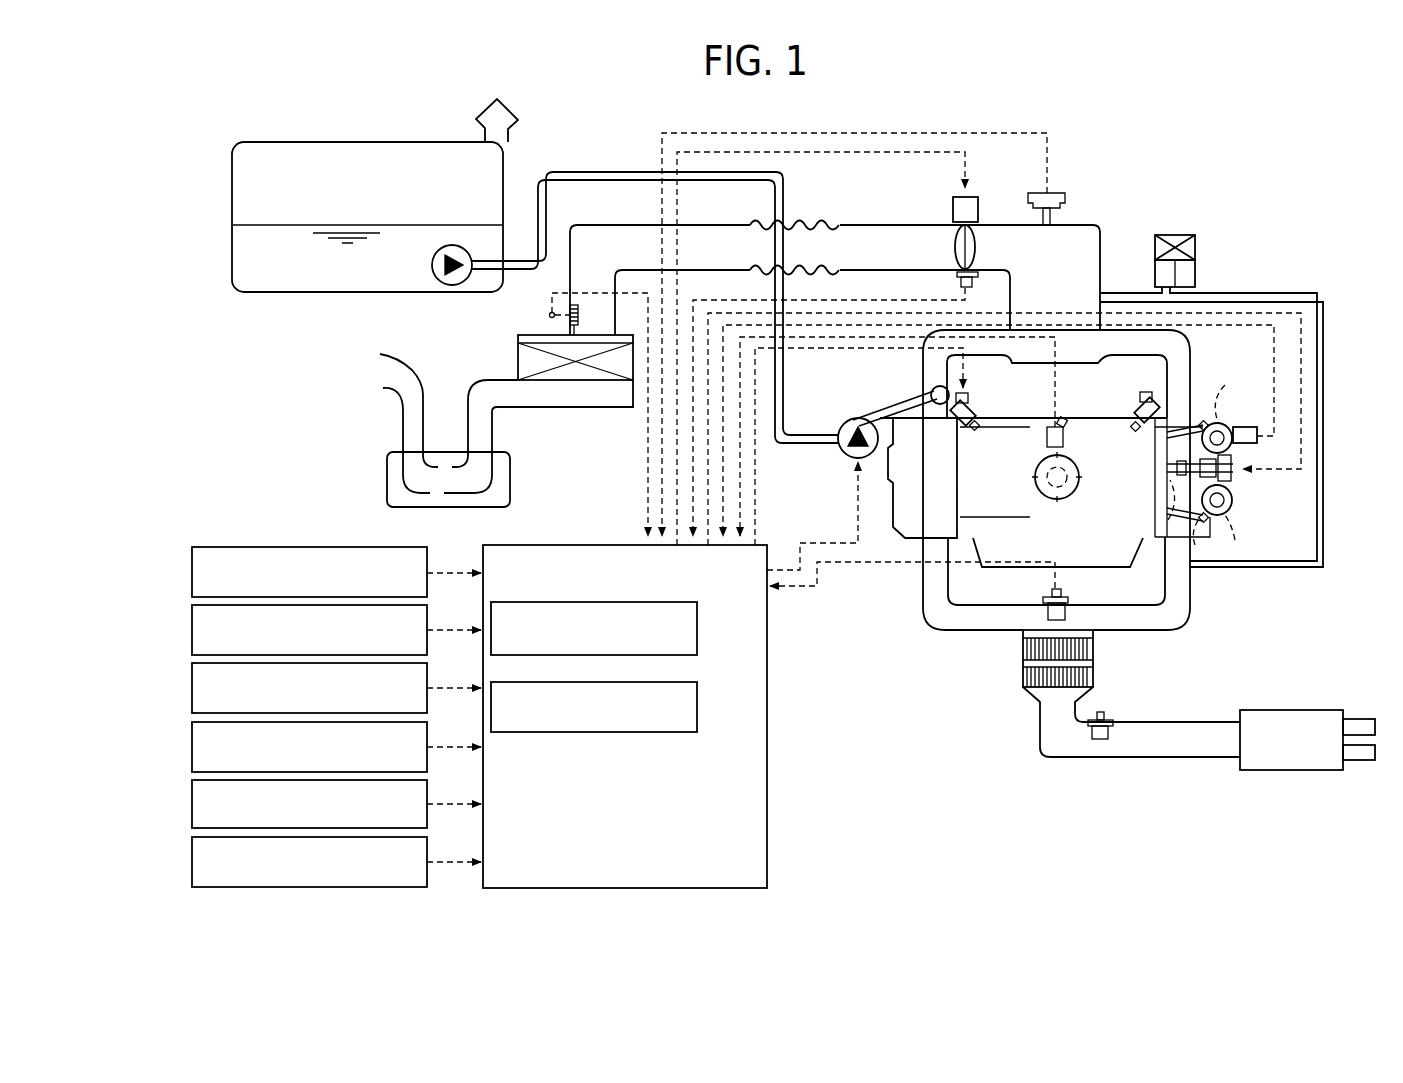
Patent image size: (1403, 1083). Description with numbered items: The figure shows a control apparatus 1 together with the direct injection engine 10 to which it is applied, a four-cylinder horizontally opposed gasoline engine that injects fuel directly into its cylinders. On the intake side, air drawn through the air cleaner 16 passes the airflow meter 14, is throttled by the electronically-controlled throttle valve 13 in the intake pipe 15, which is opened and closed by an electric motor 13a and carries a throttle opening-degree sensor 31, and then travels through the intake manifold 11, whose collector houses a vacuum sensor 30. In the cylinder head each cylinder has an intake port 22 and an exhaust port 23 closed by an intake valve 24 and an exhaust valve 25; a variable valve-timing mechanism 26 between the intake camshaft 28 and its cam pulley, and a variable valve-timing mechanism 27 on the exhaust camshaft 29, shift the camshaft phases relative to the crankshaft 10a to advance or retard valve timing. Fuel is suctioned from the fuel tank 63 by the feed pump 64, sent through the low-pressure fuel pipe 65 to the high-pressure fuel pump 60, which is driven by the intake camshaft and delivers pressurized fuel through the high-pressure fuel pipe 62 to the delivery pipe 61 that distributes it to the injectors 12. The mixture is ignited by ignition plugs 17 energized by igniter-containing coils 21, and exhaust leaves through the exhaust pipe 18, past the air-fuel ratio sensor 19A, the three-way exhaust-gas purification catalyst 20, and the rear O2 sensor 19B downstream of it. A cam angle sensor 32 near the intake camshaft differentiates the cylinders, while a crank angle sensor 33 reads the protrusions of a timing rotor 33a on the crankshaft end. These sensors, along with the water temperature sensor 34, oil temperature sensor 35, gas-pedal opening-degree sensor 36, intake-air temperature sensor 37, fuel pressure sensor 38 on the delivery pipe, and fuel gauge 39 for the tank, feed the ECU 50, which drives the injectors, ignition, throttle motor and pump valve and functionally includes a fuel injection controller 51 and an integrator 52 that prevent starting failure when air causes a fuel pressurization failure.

The control apparatus 1 is at (594, 503).
The direct injection engine 10 is at (1085, 532).
The crankshaft 10a is at (1035, 481).
The intake manifold 11 is at (925, 370).
The injector 12 is at (970, 402).
The electronically-controlled throttle valve 13 is at (955, 240).
The electric motor 13a is at (952, 203).
The airflow meter 14 is at (549, 315).
The intake pipe 15 is at (851, 222).
The air cleaner 16 is at (518, 355).
The ignition plug 17 is at (1160, 480).
The exhaust pipe 18 is at (925, 585).
The air-fuel ratio sensor 19A is at (1045, 593).
The rear O2 sensor 19B is at (1080, 718).
The exhaust-gas purification catalyst 20 is at (1093, 672).
The igniter-containing coil 21 is at (1233, 472).
The intake port 22 is at (1155, 428).
The exhaust port 23 is at (1213, 541).
The intake valve 24 is at (1162, 468).
The exhaust valve 25 is at (1158, 512).
The variable valve-timing mechanism 26 is at (1214, 422).
The variable valve-timing mechanism 27 is at (1235, 507).
The intake camshaft 28 is at (1240, 392).
The exhaust camshaft 29 is at (1244, 535).
The vacuum sensor 30 is at (1068, 198).
The throttle opening-degree sensor 31 is at (958, 280).
The cam angle sensor 32 is at (1250, 427).
The crank angle sensor 33 is at (1046, 437).
The timing rotor 33a is at (1030, 467).
The water temperature sensor 34 is at (192, 573).
The oil temperature sensor 35 is at (192, 630).
The gas-pedal opening-degree sensor 36 is at (192, 688).
The intake-air temperature sensor 37 is at (192, 747).
The fuel pressure sensor 38 is at (192, 804).
The fuel gauge 39 is at (192, 862).
The ECU 50 is at (767, 676).
The fuel injection controller 51 is at (697, 628).
The integrator 52 is at (697, 705).
The high-pressure fuel pump 60 is at (841, 426).
The delivery pipe 61 is at (930, 395).
The high-pressure fuel pipe 62 is at (868, 410).
The fuel tank 63 is at (302, 296).
The feed pump 64 is at (432, 265).
The low-pressure fuel pipe 65 is at (590, 171).